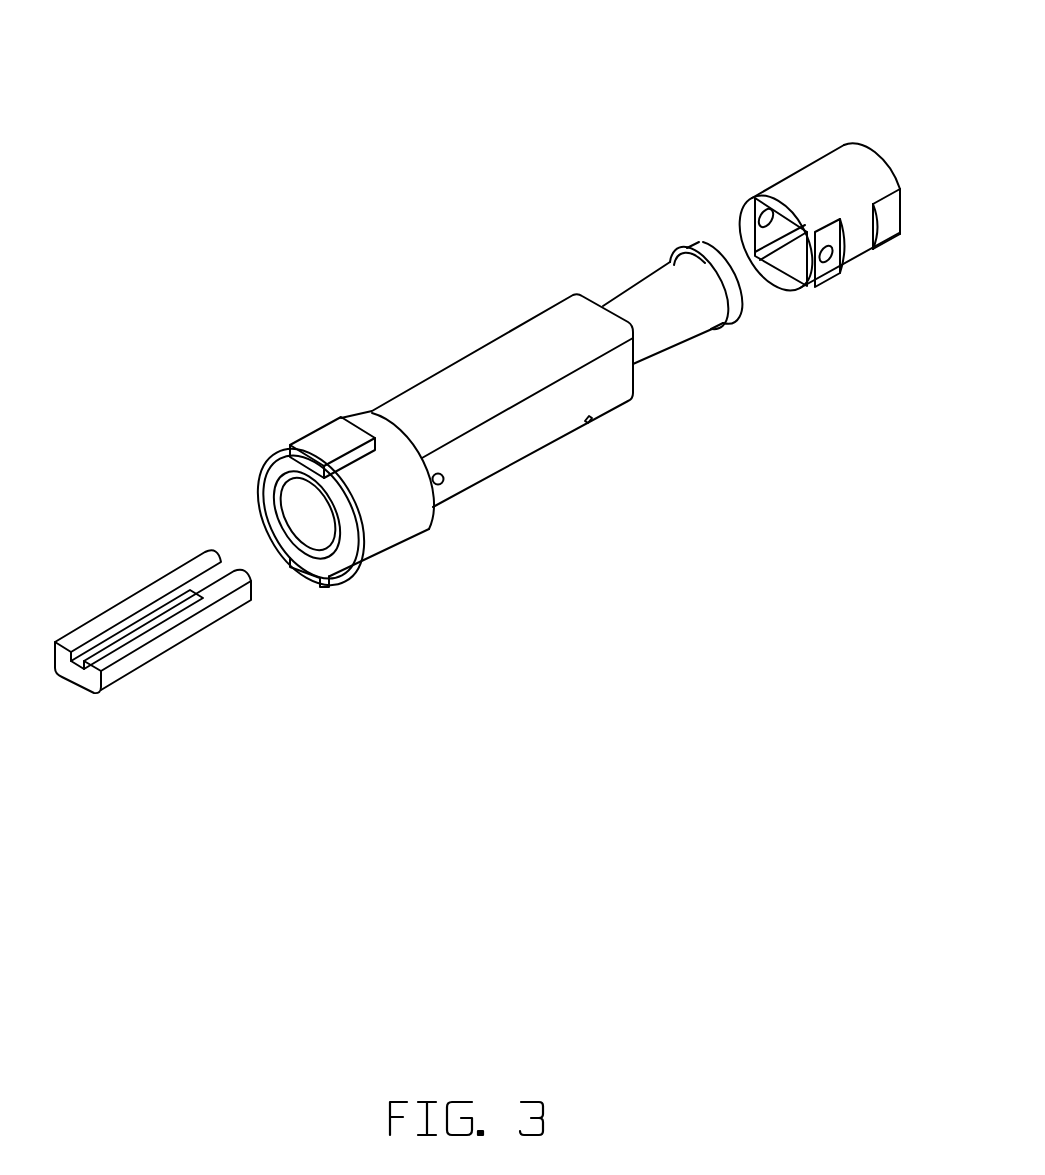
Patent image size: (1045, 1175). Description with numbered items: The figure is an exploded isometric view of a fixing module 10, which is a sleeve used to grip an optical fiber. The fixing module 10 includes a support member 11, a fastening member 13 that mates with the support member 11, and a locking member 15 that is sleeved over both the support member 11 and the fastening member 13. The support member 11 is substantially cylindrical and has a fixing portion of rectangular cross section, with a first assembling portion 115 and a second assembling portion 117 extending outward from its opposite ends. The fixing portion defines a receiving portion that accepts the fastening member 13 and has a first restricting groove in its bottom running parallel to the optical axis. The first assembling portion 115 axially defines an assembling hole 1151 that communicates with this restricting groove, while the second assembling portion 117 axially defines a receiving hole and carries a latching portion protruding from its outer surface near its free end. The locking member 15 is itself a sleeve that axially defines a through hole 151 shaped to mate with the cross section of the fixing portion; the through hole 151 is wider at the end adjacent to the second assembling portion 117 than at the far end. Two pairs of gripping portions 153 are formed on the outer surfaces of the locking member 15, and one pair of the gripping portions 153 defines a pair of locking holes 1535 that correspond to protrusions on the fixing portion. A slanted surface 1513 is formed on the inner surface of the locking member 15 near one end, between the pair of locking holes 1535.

The fixing module 10 is at (400, 35).
The support member 11 is at (490, 370).
The first assembling portion 115 is at (397, 515).
The assembling hole 1151 is at (305, 503).
The second assembling portion 117 is at (663, 335).
The fastening member 13 is at (158, 638).
The locking member 15 is at (788, 145).
The through hole 151 is at (765, 230).
The slanted surface 1513 is at (793, 268).
The gripping portions 153 is at (887, 228).
The locking holes 1535 is at (826, 262).